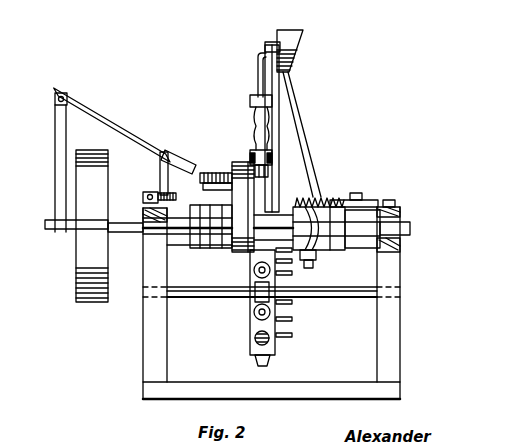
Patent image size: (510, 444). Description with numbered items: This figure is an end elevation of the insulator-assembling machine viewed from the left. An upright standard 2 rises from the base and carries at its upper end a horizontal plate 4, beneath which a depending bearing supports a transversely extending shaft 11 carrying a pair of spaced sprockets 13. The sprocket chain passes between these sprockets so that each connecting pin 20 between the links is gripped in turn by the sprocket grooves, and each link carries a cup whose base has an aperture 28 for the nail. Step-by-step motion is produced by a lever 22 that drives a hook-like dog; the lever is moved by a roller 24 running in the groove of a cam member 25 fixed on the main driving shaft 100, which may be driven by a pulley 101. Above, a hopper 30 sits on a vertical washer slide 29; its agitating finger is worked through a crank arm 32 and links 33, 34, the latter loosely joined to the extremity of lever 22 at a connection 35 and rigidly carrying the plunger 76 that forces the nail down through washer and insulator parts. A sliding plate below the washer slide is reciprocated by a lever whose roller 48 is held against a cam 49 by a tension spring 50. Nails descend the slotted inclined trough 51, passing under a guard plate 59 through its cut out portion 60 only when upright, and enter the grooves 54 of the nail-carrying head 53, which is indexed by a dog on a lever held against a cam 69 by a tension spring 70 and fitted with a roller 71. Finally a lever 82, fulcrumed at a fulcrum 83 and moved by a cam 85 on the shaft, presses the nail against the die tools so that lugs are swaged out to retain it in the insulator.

The upright standard 2 is at (150, 349).
The horizontal plate 4 is at (153, 258).
The transversely extending shaft 11 is at (366, 300).
The pair of sprockets 13 is at (250, 312).
The connecting pin 20 is at (250, 330).
The lever 22 is at (257, 168).
The roller 24 is at (279, 168).
The cam member 25 is at (243, 257).
The aperture 28 is at (292, 319).
The vertical washer slide 29 is at (279, 130).
The hopper 30 is at (290, 48).
The crank arm 32 is at (265, 47).
The link 33 is at (258, 67).
The link 34 is at (255, 125).
The loose connection 35 is at (253, 153).
The roller 48 is at (362, 207).
The cam 49 is at (358, 229).
The tension spring 50 is at (340, 196).
The inclined trough 51 is at (86, 112).
The nail-carrying head 53 is at (165, 193).
The grooves 54 is at (216, 173).
The guard plate 59 is at (188, 152).
The cut out portion 60 is at (160, 166).
The cam 69 is at (205, 248).
The tension spring 70 is at (144, 195).
The roller 71 is at (143, 214).
The plunger 76 is at (250, 100).
The lever 82 is at (309, 264).
The fulcrum 83 is at (316, 254).
The cam 85 is at (327, 194).
The main driving shaft 100 is at (128, 233).
The pulley 101 is at (78, 296).